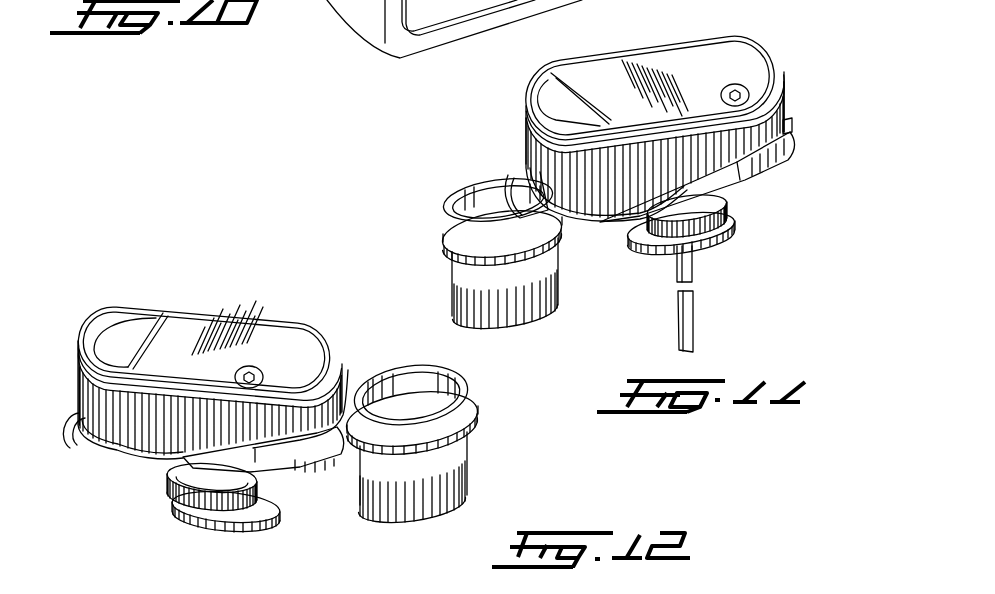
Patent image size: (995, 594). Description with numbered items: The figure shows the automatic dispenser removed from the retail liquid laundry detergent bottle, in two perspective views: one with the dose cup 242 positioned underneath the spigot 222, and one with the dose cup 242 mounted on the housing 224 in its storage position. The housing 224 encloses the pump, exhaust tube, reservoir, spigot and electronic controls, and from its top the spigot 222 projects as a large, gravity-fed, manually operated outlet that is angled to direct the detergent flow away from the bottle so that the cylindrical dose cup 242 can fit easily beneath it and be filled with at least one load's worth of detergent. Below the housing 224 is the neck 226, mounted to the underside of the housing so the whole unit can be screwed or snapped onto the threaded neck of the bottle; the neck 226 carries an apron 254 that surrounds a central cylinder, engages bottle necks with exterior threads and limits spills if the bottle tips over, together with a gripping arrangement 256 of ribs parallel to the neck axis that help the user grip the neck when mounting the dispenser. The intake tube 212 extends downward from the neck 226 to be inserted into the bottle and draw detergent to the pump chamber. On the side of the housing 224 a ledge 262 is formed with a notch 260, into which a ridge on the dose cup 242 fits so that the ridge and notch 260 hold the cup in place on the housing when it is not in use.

In FIG. 11, the intake tube 212 is at (697, 313).
In FIG. 11, the spigot 222 is at (518, 182).
In FIG. 12, the spigot 222 is at (66, 440).
In FIG. 11, the housing 224 is at (680, 63).
In FIG. 12, the housing 224 is at (200, 320).
In FIG. 11, the neck 226 is at (733, 202).
In FIG. 12, the neck 226 is at (180, 478).
In FIG. 11, the dose cup 242 is at (557, 283).
In FIG. 12, the dose cup 242 is at (460, 468).
In FIG. 11, the apron 254 is at (727, 223).
In FIG. 12, the apron 254 is at (273, 510).
In FIG. 12, the gripping arrangement 256 is at (207, 500).
In FIG. 11, the notch 260 is at (789, 130).
In FIG. 11, the ledge 262 is at (773, 140).
In FIG. 12, the ledge 262 is at (263, 449).